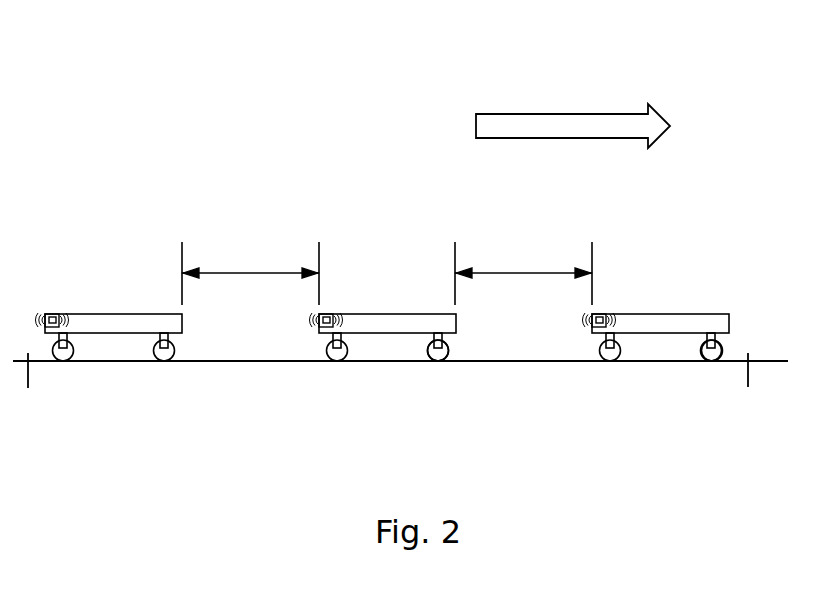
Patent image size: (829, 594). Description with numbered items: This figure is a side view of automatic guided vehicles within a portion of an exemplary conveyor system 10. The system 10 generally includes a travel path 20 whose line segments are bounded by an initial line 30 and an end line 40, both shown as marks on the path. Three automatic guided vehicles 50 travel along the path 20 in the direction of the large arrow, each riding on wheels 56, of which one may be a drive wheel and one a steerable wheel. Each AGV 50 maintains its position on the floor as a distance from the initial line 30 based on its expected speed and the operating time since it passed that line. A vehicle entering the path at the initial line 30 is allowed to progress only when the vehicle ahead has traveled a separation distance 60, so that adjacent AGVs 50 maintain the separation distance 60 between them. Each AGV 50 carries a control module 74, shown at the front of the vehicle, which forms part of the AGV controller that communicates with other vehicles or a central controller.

The system 10 is at (175, 127).
The travel path 20 is at (520, 362).
The initial line 30 is at (28, 375).
The end line 40 is at (748, 373).
The automatic guided vehicle 50 is at (113, 320).
The wheels 56 is at (448, 357).
The separation distance 60 is at (249, 272).
The control module 74 is at (53, 312).